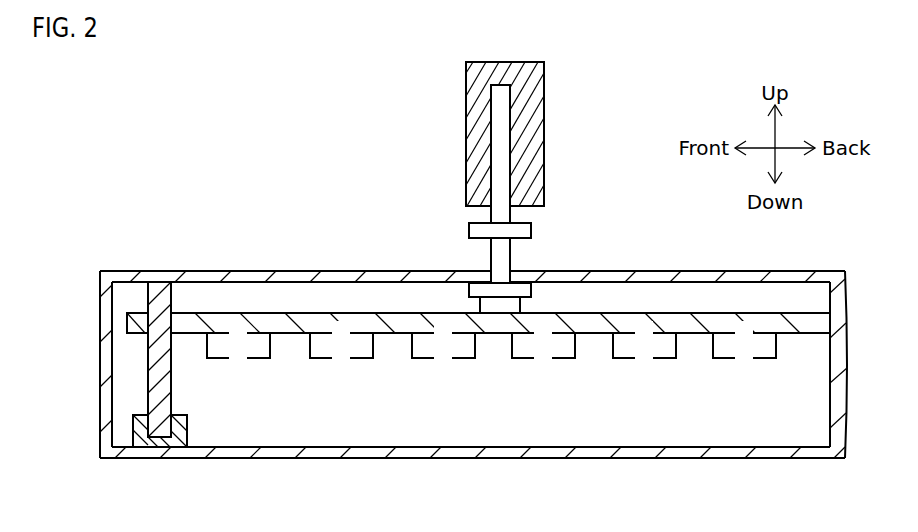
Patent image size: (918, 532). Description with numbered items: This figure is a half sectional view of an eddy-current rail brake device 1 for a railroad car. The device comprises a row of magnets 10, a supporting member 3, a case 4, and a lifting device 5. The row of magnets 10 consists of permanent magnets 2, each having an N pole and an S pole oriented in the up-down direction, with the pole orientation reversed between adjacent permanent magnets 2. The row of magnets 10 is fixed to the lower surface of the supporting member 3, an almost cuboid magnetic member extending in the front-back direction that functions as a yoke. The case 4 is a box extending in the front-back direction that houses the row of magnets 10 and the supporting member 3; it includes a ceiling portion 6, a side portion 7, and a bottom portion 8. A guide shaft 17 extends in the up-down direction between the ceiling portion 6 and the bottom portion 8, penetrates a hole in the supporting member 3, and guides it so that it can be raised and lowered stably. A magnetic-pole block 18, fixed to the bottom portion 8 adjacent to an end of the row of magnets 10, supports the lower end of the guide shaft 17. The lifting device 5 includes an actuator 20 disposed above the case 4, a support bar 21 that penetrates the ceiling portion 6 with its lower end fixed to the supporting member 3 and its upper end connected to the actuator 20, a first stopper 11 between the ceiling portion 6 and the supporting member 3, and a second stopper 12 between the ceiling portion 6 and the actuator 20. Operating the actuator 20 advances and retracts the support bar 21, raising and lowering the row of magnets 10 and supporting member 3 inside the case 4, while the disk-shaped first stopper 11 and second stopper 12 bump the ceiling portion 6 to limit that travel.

The eddy-current rail brake device 1 is at (183, 165).
The permanent magnet 2 is at (256, 358).
The supporting member 3 is at (263, 313).
The case 4 is at (340, 262).
The lifting device 5 is at (572, 93).
The ceiling portion 6 is at (393, 271).
The side portion 7 is at (100, 400).
The bottom portion 8 is at (412, 458).
The row of magnets 10 is at (367, 363).
The first stopper 11 is at (531, 290).
The second stopper 12 is at (531, 230).
The guide shaft 17 is at (149, 362).
The magnetic-pole block 18 is at (187, 427).
The actuator 20 is at (547, 133).
The support bar 21 is at (510, 255).